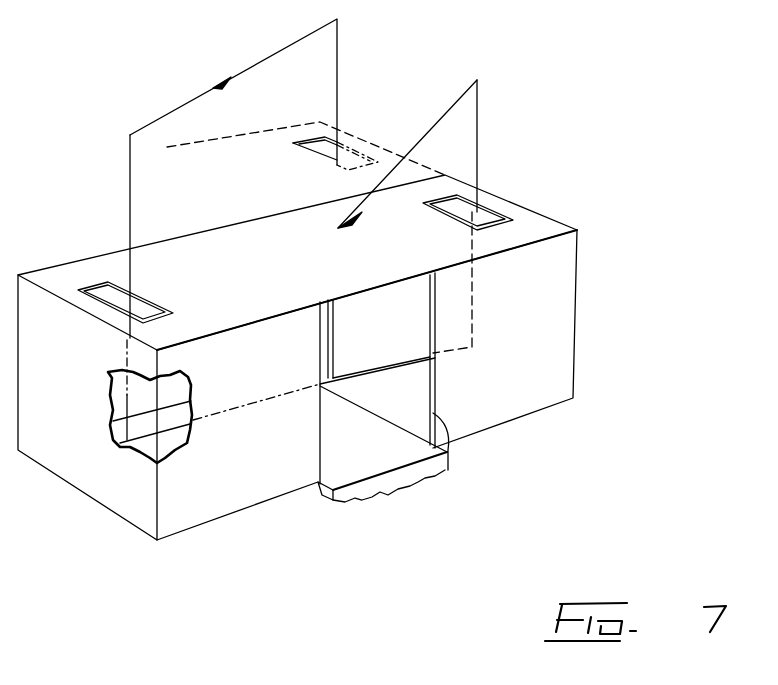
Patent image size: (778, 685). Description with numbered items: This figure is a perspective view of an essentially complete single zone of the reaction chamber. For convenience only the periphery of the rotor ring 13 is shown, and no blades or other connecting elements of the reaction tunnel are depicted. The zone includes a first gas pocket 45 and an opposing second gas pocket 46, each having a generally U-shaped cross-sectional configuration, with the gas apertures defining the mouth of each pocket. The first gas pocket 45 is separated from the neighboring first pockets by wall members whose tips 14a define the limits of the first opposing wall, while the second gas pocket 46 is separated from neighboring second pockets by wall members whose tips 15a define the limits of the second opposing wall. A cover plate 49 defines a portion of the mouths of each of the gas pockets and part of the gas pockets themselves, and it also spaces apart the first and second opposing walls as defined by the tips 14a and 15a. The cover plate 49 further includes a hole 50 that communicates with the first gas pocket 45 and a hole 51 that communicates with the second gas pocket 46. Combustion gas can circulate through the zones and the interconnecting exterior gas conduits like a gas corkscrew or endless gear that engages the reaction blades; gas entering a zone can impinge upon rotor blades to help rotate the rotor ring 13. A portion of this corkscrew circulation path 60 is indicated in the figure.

The rotor ring 13 is at (352, 467).
The tips of wall members 14a is at (318, 443).
The tips of wall members 15a is at (448, 470).
The first gas pocket 45 is at (137, 397).
The second gas pocket 46 is at (398, 383).
The cover plate 49 is at (287, 227).
The hole 50 is at (118, 293).
The hole 51 is at (340, 150).
The corkscrew circulation path 60 is at (182, 107).